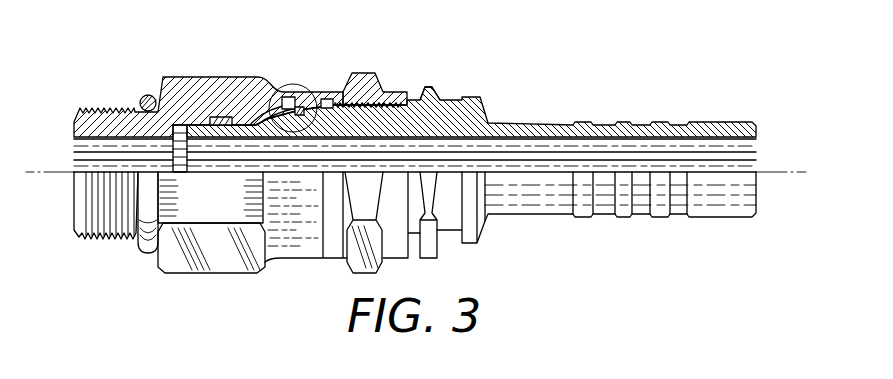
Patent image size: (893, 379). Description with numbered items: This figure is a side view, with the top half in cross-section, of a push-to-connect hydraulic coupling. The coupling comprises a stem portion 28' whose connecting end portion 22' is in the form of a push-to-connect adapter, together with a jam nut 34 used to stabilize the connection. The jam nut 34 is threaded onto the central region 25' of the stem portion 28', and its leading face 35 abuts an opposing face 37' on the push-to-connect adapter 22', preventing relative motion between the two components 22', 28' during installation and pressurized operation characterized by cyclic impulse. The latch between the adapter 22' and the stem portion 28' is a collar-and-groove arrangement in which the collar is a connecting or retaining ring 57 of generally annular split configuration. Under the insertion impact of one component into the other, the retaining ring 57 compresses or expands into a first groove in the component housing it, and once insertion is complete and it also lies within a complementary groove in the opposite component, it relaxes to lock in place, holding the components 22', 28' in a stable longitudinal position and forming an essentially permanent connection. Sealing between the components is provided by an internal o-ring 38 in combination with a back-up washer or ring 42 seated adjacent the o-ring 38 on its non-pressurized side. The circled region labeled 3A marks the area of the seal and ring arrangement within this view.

The connecting end portion 22' is at (210, 160).
The internal o-ring 38 is at (258, 116).
The back-up washer 42 is at (222, 117).
The detail area of FIG. 3A is at (278, 89).
The opposing face 37' is at (304, 77).
The leading face 35 is at (328, 99).
The jam nut 34 is at (373, 75).
The central region 25' is at (455, 152).
The stem portion 28' is at (416, 172).
The retaining ring 57 is at (292, 112).